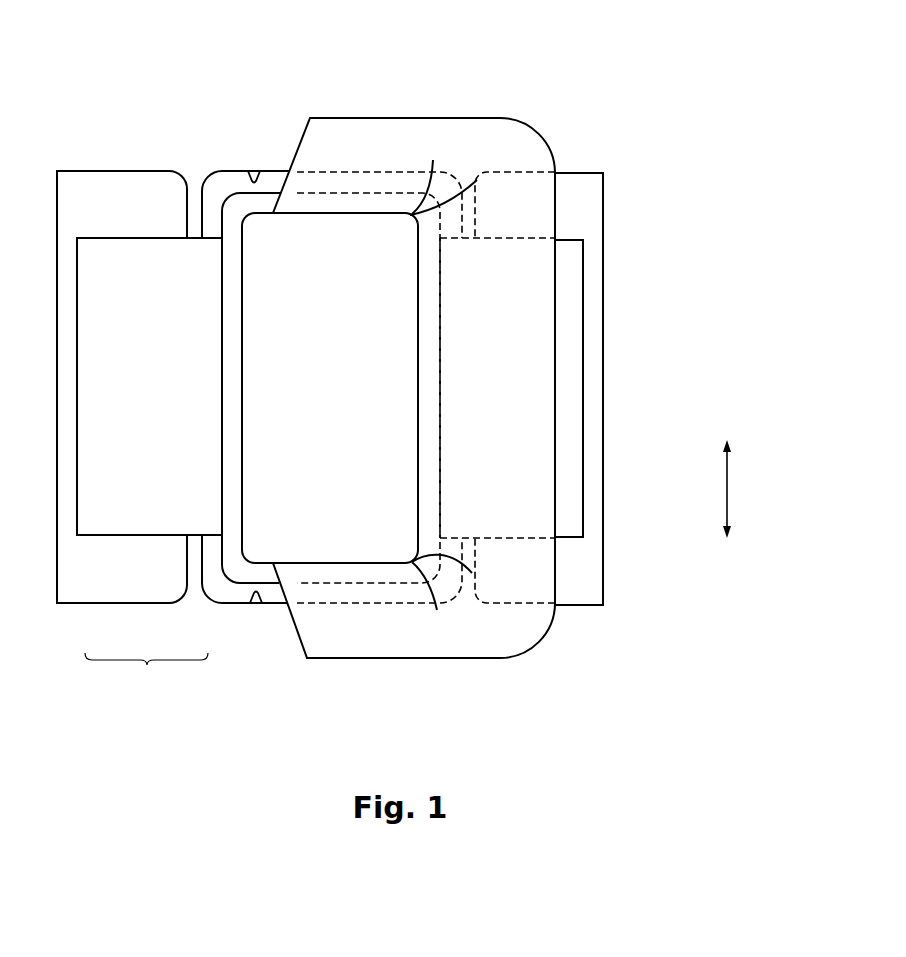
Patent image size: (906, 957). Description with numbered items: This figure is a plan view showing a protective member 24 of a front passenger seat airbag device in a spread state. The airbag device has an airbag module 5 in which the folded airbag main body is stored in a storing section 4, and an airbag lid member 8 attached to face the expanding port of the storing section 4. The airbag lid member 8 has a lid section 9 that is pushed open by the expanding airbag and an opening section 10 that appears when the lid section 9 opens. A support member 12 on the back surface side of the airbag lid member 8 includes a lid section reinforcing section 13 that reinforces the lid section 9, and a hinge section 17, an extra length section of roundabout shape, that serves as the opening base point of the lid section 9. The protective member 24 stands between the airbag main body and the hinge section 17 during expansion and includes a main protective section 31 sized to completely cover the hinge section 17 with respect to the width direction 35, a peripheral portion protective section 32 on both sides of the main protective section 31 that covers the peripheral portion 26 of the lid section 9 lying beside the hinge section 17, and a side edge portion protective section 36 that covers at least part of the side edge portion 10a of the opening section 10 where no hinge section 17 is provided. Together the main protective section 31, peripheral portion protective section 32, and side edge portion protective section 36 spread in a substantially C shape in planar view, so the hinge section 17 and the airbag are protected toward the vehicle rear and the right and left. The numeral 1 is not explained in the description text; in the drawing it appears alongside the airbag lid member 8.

The panel 1 is at (298, 117).
The airbag lid member 8 is at (414, 341).
The storing section 4 is at (235, 197).
The airbag module 5 is at (290, 326).
The lid section 9 is at (112, 171).
The opening section 10 is at (235, 163).
The side edge portion 10a is at (256, 180).
The support member 12 is at (382, 436).
The lid section reinforcing section 13 is at (110, 523).
The hinge section 17 is at (192, 523).
The protective member 24 is at (540, 361).
The peripheral portion 26 is at (503, 187).
The main protective section 31 is at (527, 422).
The peripheral portion protective section 32 is at (562, 213).
The width direction 35 is at (729, 498).
The side edge portion protective section 36 is at (424, 115).